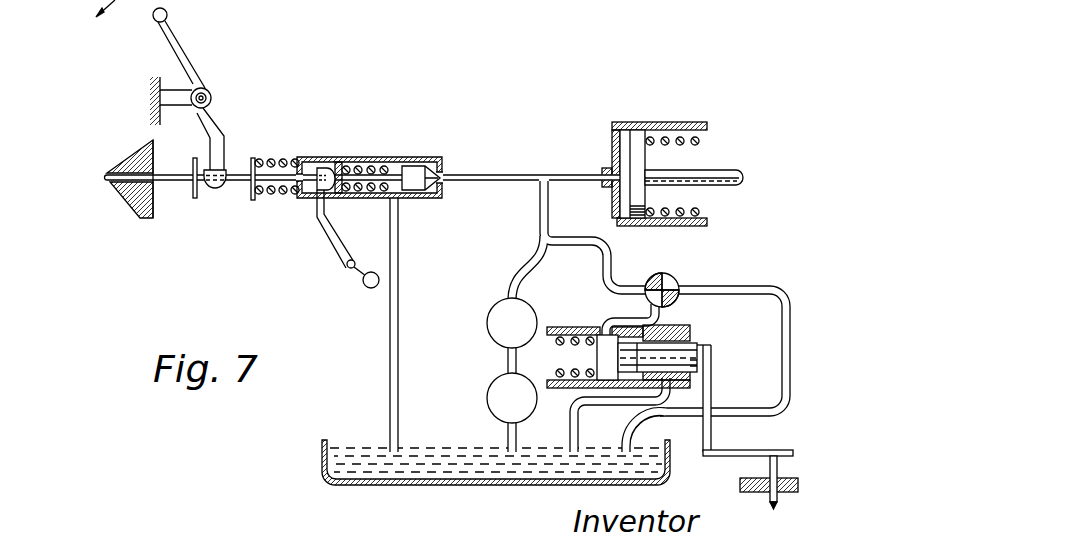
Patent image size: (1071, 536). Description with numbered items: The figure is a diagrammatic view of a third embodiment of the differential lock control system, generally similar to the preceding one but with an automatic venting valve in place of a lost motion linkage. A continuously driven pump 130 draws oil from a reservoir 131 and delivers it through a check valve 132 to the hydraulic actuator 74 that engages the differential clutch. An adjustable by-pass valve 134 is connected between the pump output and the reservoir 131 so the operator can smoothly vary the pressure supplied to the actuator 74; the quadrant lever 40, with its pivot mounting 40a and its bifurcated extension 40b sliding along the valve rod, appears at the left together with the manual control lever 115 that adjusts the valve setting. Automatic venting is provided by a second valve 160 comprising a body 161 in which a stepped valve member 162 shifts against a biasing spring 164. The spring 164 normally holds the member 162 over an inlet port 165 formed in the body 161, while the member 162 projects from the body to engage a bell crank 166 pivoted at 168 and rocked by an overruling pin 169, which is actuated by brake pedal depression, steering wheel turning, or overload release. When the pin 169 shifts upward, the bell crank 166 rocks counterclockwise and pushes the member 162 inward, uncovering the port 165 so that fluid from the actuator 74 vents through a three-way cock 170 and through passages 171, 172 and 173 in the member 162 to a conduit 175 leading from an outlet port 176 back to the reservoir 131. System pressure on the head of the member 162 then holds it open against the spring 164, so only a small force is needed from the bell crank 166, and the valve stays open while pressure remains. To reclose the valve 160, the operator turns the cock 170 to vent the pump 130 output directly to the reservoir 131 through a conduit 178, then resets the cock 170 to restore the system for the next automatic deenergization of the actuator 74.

The quadrant lever 40 is at (190, 73).
The lever pivot 40a is at (194, 108).
The bifurcated extension 40b is at (216, 192).
The hydraulic actuator 74 is at (651, 114).
The auxiliary lever 115 is at (330, 240).
The pump 130 is at (489, 398).
The reservoir 131 is at (457, 484).
The check valve 132 is at (488, 321).
The adjustable by-pass valve 134 is at (402, 153).
The second valve 160 is at (649, 348).
The body 161 is at (684, 340).
The stepped valve member 162 is at (590, 380).
The biasing spring 164 is at (578, 364).
The inlet port 165 is at (605, 328).
The bell crank 166 is at (752, 450).
The pivot 168 is at (707, 458).
The overruling pin 169 is at (773, 500).
The three-way cock 170 is at (649, 279).
The passage 171 is at (632, 352).
The passage 172 is at (672, 336).
The passage 173 is at (695, 337).
The conduit 175 is at (664, 431).
The outlet port 176 is at (670, 381).
The conduit 178 is at (743, 287).